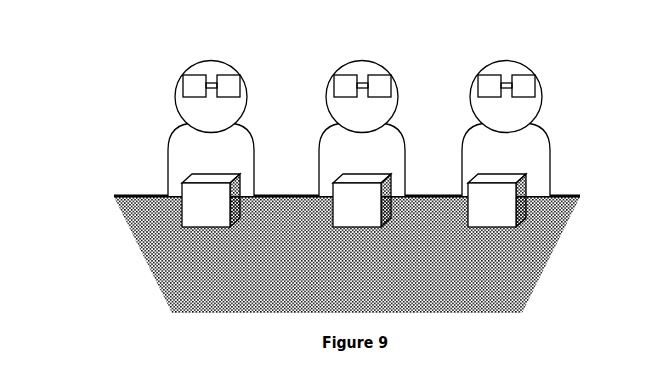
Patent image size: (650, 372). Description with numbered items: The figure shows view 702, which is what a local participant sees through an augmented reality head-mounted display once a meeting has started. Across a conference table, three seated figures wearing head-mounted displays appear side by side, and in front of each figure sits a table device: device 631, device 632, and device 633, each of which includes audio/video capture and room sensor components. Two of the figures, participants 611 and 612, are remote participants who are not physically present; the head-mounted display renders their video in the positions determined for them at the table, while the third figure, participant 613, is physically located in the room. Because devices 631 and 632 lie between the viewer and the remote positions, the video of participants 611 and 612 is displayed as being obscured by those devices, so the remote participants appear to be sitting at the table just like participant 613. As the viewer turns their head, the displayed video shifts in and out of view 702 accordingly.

The view 702 is at (64, 73).
The participant 611 is at (225, 168).
The participant 612 is at (376, 168).
The participant 613 is at (520, 168).
The device 631 is at (221, 212).
The device 632 is at (371, 212).
The device 633 is at (506, 212).